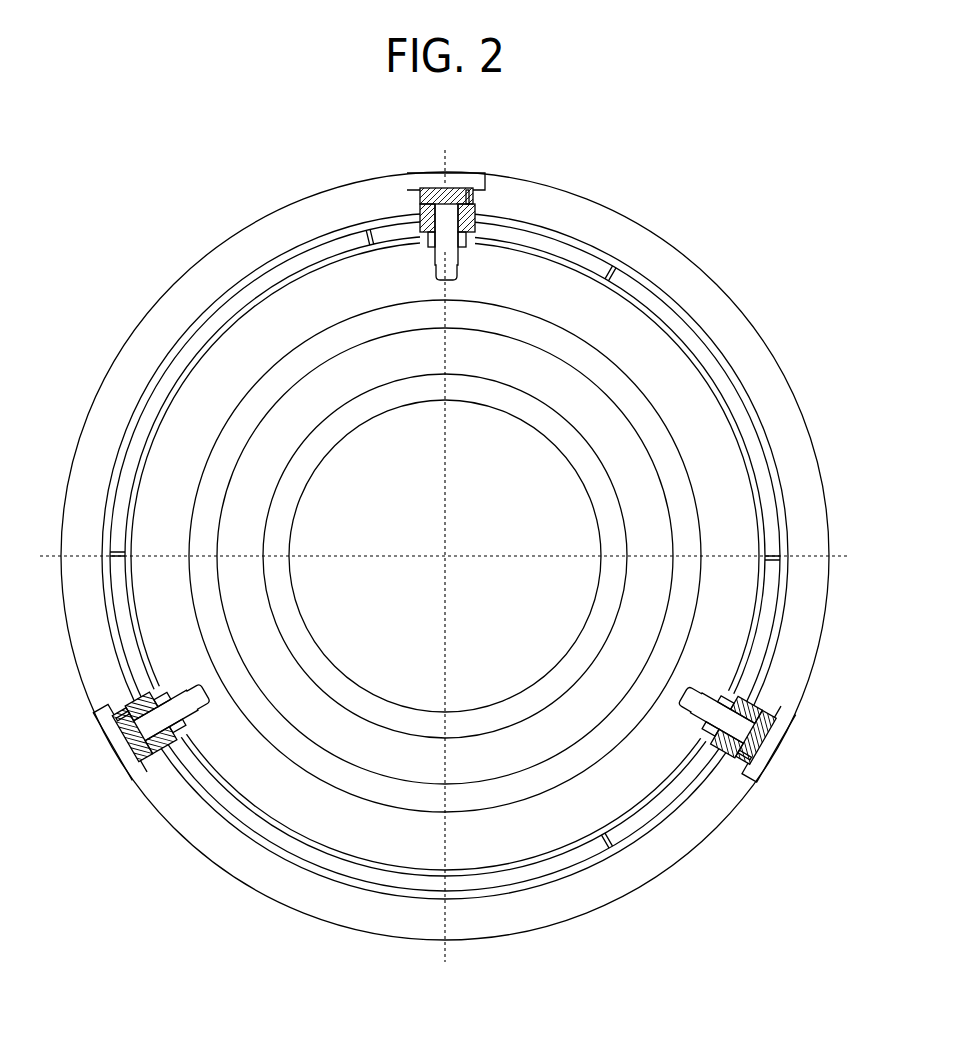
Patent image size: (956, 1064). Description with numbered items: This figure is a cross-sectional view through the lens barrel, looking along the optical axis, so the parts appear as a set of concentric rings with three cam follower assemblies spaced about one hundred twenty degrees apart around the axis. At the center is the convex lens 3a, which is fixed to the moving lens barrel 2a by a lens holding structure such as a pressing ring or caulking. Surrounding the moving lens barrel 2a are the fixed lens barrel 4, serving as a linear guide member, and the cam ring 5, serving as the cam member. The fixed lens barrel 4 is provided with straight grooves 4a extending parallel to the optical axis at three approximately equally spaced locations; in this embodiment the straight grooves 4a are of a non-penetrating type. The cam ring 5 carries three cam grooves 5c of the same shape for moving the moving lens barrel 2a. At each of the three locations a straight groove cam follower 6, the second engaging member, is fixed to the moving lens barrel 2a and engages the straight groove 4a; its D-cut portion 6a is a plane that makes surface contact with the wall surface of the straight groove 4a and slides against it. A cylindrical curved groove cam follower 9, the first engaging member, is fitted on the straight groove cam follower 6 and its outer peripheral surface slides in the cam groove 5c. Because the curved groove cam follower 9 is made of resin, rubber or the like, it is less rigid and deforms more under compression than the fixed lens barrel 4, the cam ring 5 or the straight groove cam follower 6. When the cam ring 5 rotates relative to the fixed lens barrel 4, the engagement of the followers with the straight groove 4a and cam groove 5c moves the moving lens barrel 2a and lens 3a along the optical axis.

The moving lens barrel 2a is at (222, 363).
The lens 3a is at (318, 510).
The fixed lens barrel 4 is at (213, 260).
The straight groove 4a is at (470, 212).
The cam ring 5 is at (300, 263).
The cam groove 5c is at (579, 257).
The straight groove cam follower 6 is at (424, 210).
The D-cut portion 6a is at (469, 206).
The curved groove cam follower 9 is at (423, 226).